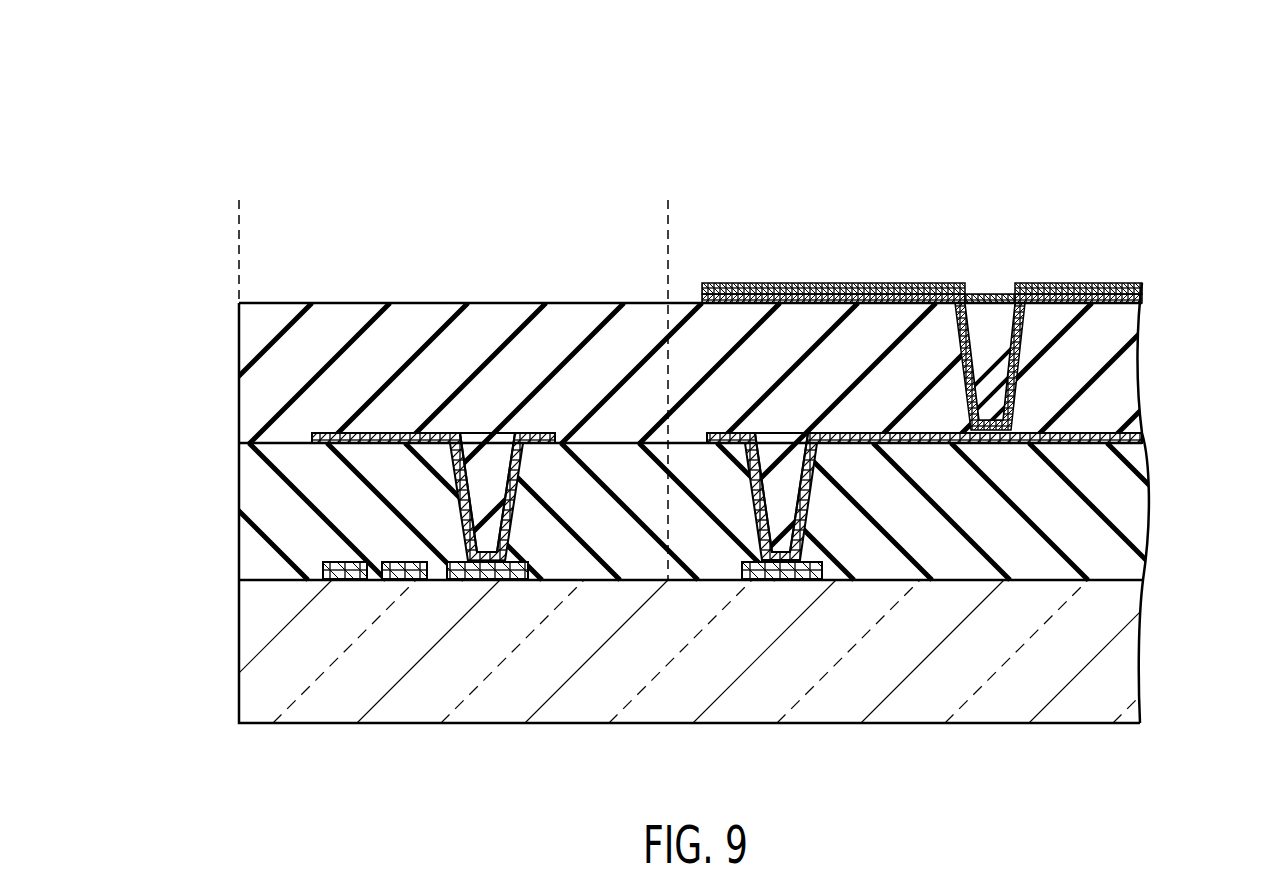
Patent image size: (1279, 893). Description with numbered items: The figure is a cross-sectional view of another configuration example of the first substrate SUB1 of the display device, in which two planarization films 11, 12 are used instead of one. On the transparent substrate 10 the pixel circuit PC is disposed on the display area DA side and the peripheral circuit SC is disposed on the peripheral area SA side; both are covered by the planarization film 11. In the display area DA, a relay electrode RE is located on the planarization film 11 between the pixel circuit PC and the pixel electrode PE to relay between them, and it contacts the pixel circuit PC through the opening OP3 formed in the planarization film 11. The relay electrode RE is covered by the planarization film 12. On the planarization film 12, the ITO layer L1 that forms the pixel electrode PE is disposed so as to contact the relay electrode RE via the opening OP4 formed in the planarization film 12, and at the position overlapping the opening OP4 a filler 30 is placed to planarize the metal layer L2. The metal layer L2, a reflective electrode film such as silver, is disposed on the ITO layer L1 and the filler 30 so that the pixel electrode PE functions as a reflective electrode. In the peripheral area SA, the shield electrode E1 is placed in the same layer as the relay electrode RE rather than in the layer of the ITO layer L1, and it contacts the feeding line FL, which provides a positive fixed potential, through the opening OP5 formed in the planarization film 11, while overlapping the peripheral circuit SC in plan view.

The first substrate SUB1 is at (827, 127).
The transparent substrate 10 is at (247, 650).
The planarization film 11 is at (247, 506).
The planarization film 12 is at (247, 364).
The peripheral area SA is at (657, 213).
The display area DA is at (679, 213).
The opening OP5 is at (450, 505).
The shield electrode E1 is at (513, 495).
The opening OP3 is at (747, 505).
The opening OP4 is at (955, 350).
The filler 30 is at (995, 323).
The pixel electrode PE is at (976, 351).
The ITO layer L1 is at (1140, 299).
The metal layer L2 is at (1140, 288).
The peripheral circuit SC is at (323, 582).
The feeding line FL is at (527, 563).
The pixel circuit PC is at (777, 570).
The relay electrode RE is at (803, 510).